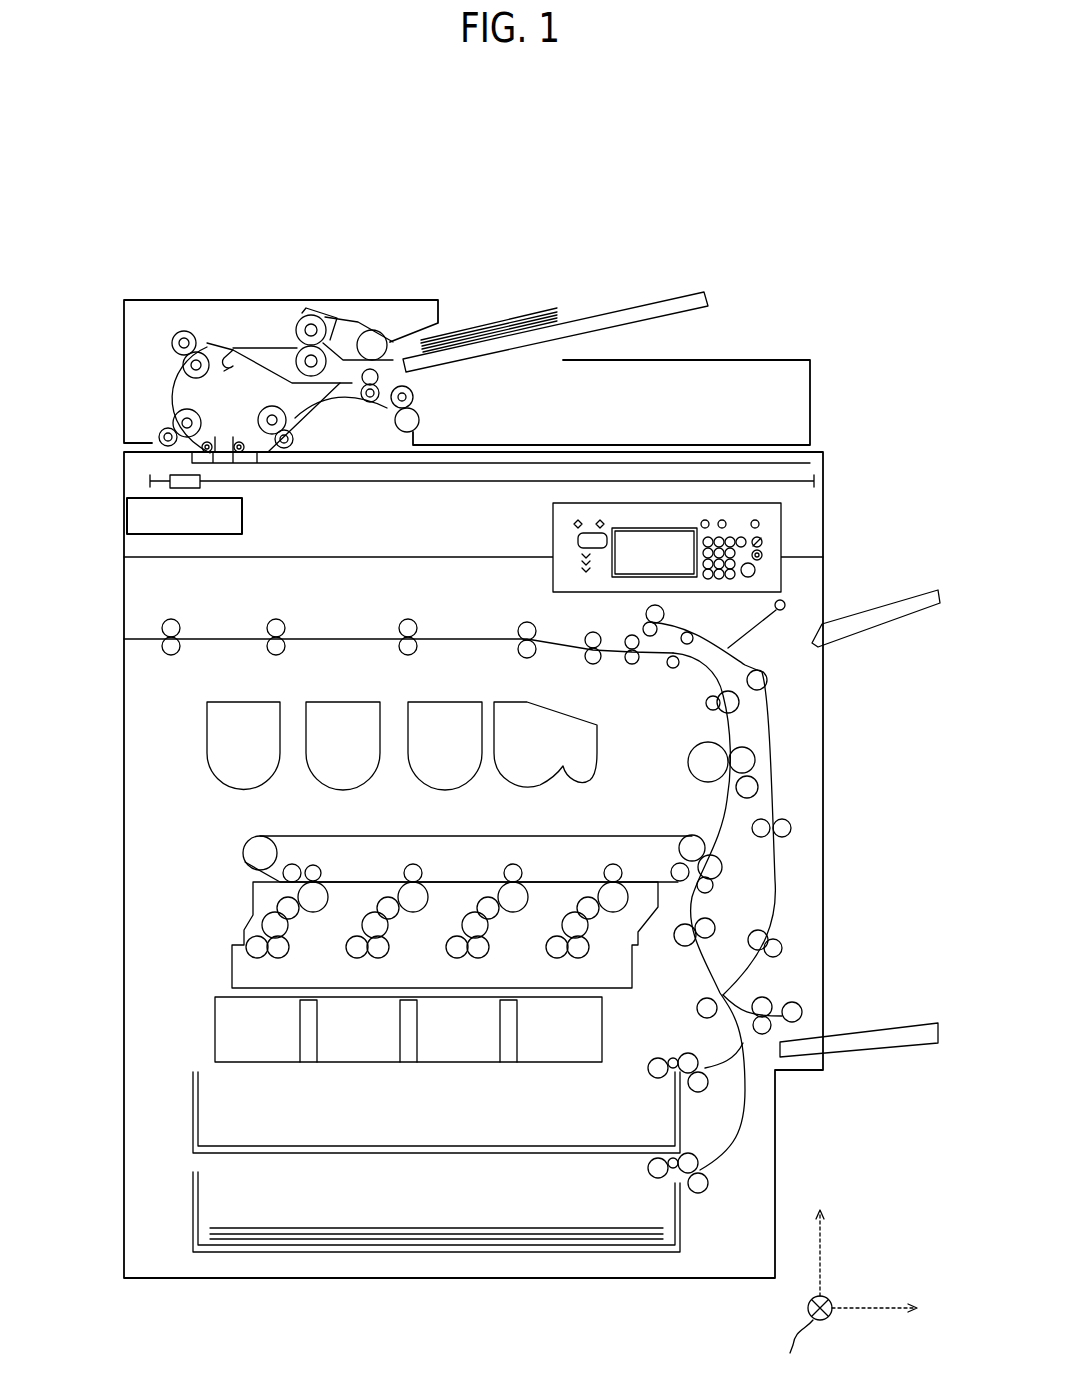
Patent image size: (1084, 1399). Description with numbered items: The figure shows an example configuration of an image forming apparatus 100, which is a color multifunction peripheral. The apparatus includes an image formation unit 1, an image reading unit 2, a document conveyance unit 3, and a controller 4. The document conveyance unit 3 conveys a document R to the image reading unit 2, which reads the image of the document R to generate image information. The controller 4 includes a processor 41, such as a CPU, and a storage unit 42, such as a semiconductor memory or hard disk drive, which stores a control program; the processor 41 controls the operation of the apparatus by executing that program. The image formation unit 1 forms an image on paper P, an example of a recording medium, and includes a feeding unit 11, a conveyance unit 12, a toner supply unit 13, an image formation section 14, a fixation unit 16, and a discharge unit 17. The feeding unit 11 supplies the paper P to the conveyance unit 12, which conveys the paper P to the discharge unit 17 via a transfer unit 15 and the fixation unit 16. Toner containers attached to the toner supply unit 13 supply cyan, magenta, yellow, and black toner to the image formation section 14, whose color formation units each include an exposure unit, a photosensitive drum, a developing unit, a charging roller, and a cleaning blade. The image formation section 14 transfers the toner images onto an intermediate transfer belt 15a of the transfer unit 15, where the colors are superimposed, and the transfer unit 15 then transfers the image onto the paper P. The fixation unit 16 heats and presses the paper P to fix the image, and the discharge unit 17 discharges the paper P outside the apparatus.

The image forming apparatus 100 is at (719, 209).
The image formation unit 1 is at (870, 705).
The image reading unit 2 is at (828, 490).
The document conveyance unit 3 is at (828, 410).
The controller 4 is at (257, 515).
The processor 41 is at (257, 515).
The storage unit 42 is at (245, 518).
The feeding unit 11 is at (174, 1203).
The conveyance unit 12 is at (321, 632).
The toner supply unit 13 is at (168, 744).
The image formation section 14 is at (160, 953).
The transfer unit 15 is at (215, 846).
The intermediate transfer belt 15a is at (408, 834).
The fixation unit 16 is at (689, 731).
The discharge unit 17 is at (141, 621).
The paper P is at (308, 1240).
The document R is at (543, 303).